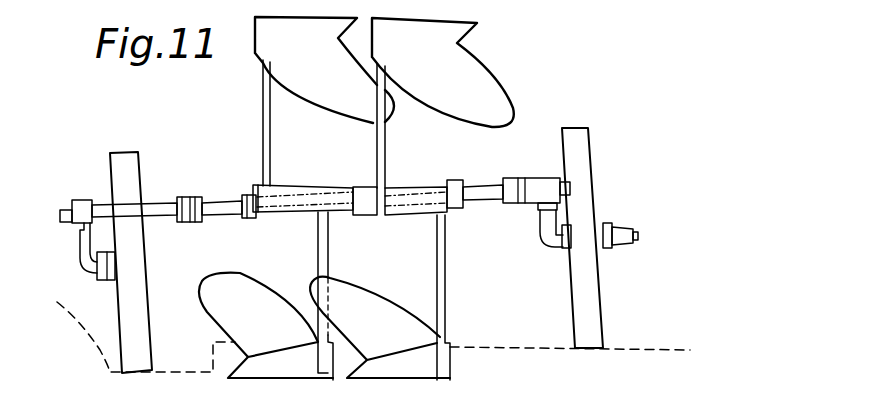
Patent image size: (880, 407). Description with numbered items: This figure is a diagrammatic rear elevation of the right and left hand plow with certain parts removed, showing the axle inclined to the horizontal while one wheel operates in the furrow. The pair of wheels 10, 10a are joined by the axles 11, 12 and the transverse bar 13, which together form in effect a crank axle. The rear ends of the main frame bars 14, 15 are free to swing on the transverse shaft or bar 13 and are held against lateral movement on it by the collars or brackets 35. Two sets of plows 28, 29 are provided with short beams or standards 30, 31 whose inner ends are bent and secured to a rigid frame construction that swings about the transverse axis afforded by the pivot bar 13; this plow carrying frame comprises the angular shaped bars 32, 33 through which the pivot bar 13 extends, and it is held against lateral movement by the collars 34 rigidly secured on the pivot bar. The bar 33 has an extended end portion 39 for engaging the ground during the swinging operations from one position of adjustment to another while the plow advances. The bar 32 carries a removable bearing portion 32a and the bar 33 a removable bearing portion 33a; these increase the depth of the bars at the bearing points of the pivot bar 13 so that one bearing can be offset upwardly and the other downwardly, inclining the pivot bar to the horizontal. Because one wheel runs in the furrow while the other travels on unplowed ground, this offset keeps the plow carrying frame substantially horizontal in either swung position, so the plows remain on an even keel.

The wheel 10 is at (588, 152).
The wheel 10a is at (133, 182).
The axle 11 is at (547, 220).
The axle 12 is at (83, 233).
The transverse bar 13 is at (490, 195).
The frame bar 14 is at (550, 164).
The frame bar 15 is at (180, 221).
The set of plows 28 is at (393, 287).
The set of plows 29 is at (505, 70).
The standard 30 is at (458, 266).
The standard 31 is at (397, 155).
The angular shaped bar 32 is at (425, 192).
The removable bearing portion 32a is at (448, 177).
The angular shaped bar 33 is at (295, 193).
The removable bearing portion 33a is at (263, 217).
The collar 34 is at (247, 194).
The collar 35 is at (203, 221).
The extended end portion 39 is at (365, 197).